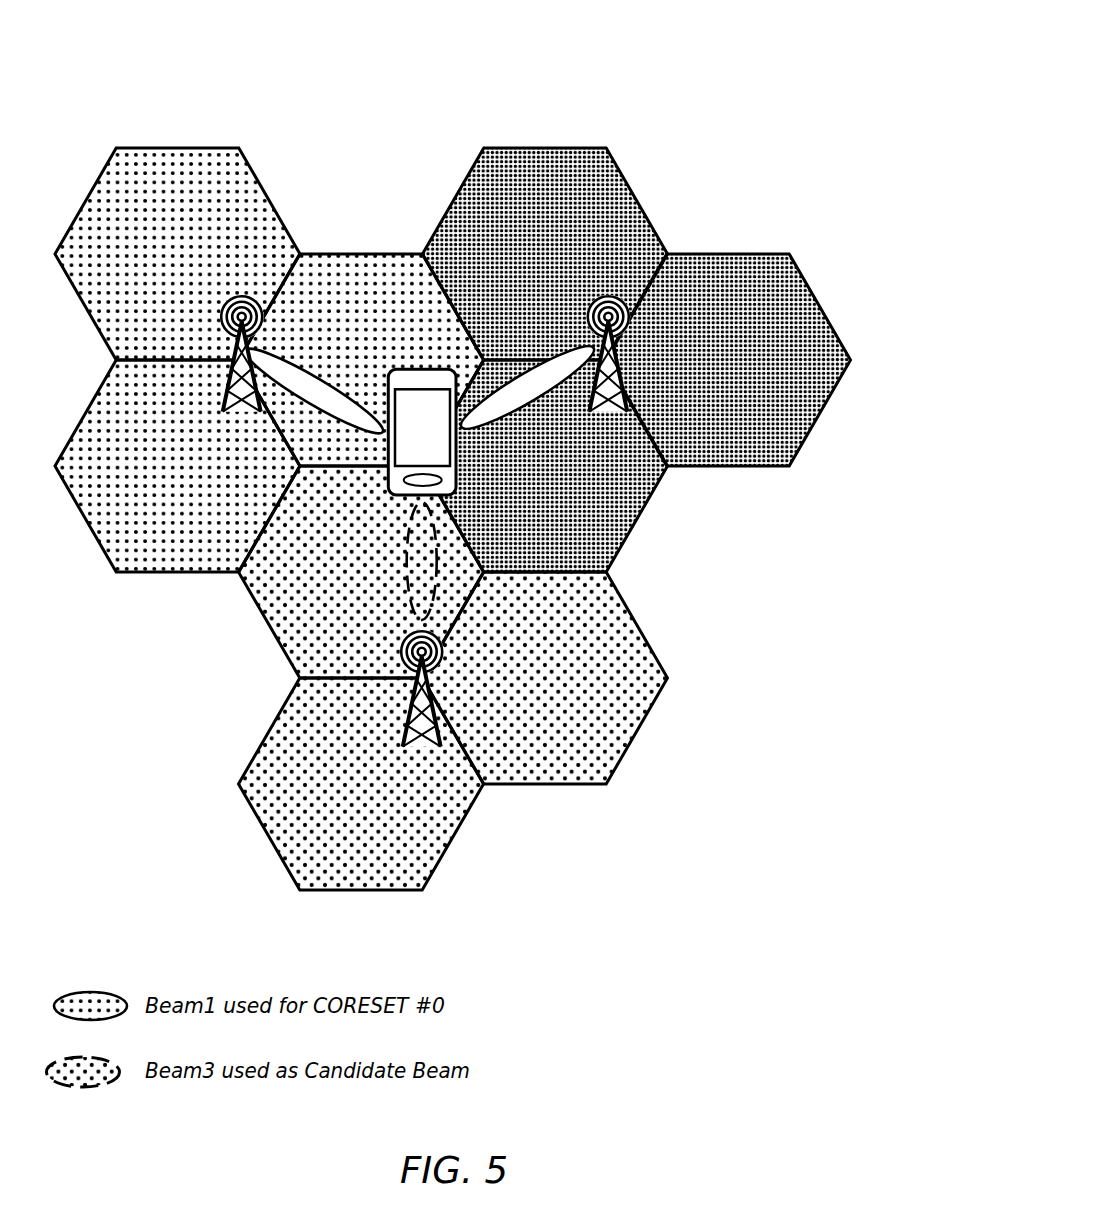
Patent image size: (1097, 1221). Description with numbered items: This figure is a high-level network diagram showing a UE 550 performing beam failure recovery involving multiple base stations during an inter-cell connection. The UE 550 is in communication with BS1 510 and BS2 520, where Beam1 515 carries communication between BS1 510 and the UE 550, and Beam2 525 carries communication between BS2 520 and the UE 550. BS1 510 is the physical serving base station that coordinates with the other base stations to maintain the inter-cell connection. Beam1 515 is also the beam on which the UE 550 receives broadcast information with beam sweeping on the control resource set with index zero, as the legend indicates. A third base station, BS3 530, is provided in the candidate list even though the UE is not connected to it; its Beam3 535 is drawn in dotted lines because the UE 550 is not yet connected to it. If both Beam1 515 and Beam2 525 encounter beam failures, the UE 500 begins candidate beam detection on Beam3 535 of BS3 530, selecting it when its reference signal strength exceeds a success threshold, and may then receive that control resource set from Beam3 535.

The UE 500 is at (730, 55).
The BS1 510 is at (238, 338).
The Beam1 515 is at (290, 354).
The BS2 520 is at (628, 367).
The Beam2 525 is at (528, 407).
The BS3 530 is at (443, 688).
The Beam3 535 is at (407, 560).
The UE 550 is at (422, 428).